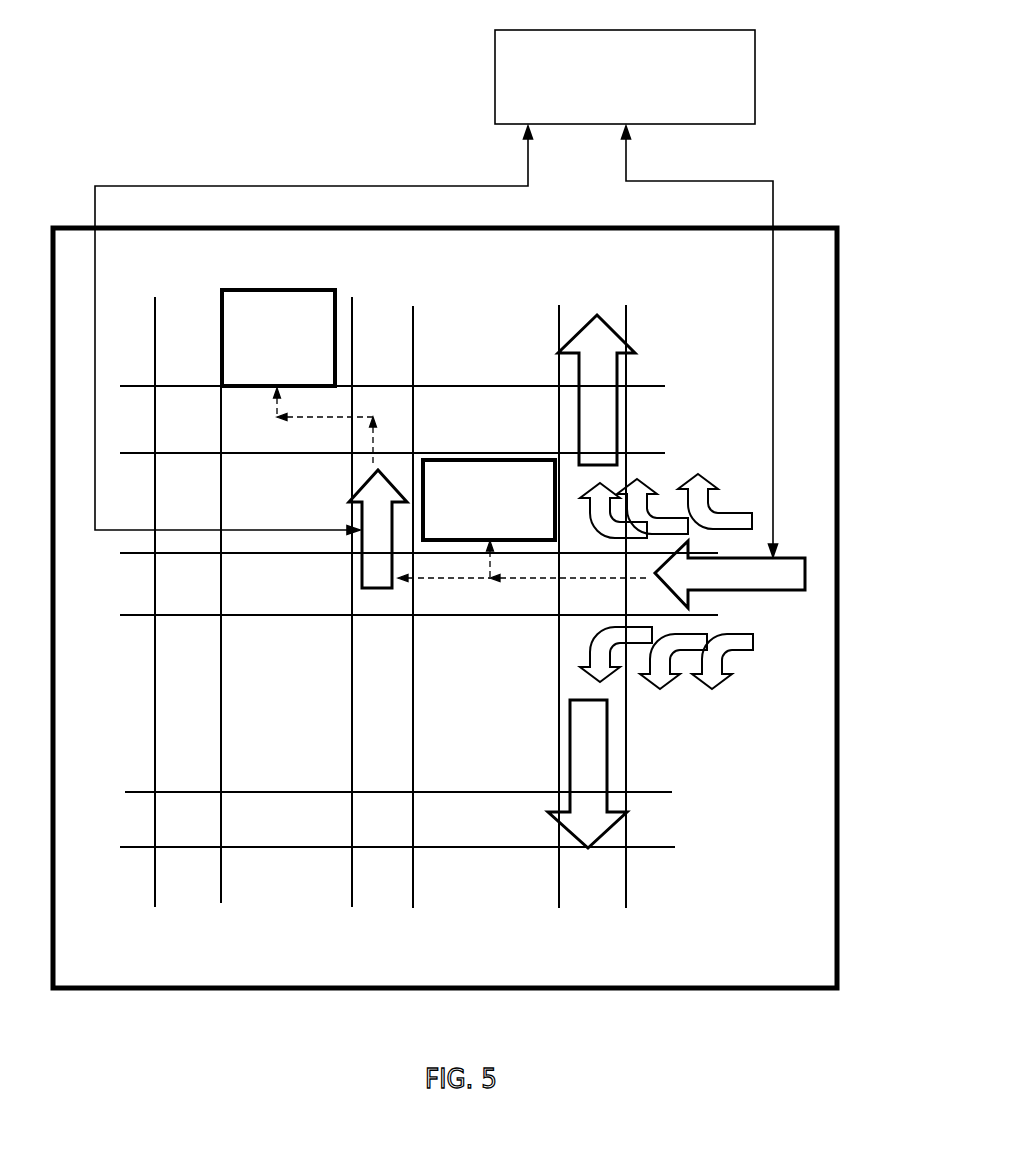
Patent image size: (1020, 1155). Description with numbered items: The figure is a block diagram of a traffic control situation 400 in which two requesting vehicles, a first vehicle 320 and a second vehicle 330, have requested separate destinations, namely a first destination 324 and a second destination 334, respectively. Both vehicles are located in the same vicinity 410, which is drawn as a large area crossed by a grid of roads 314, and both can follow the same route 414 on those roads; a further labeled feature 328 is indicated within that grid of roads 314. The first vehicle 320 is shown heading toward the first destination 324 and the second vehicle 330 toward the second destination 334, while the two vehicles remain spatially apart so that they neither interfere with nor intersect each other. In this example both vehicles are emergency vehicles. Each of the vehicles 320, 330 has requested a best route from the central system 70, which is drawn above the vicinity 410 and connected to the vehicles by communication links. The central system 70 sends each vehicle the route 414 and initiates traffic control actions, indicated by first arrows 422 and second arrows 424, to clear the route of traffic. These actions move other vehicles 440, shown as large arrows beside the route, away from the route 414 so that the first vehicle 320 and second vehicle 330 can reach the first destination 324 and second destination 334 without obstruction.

The central system 70 is at (703, 100).
The roads 314 is at (189, 307).
The first vehicle 320 is at (371, 502).
The first destination 324 is at (288, 329).
The location in facility 328 is at (465, 394).
The second vehicle 330 is at (750, 584).
The second destination 334 is at (468, 492).
The traffic control situation 400 is at (156, 114).
The vicinity 410 is at (770, 961).
The route 414 is at (531, 590).
The first arrows 422 is at (724, 476).
The second arrows 424 is at (743, 674).
The vehicles 440 is at (588, 367).